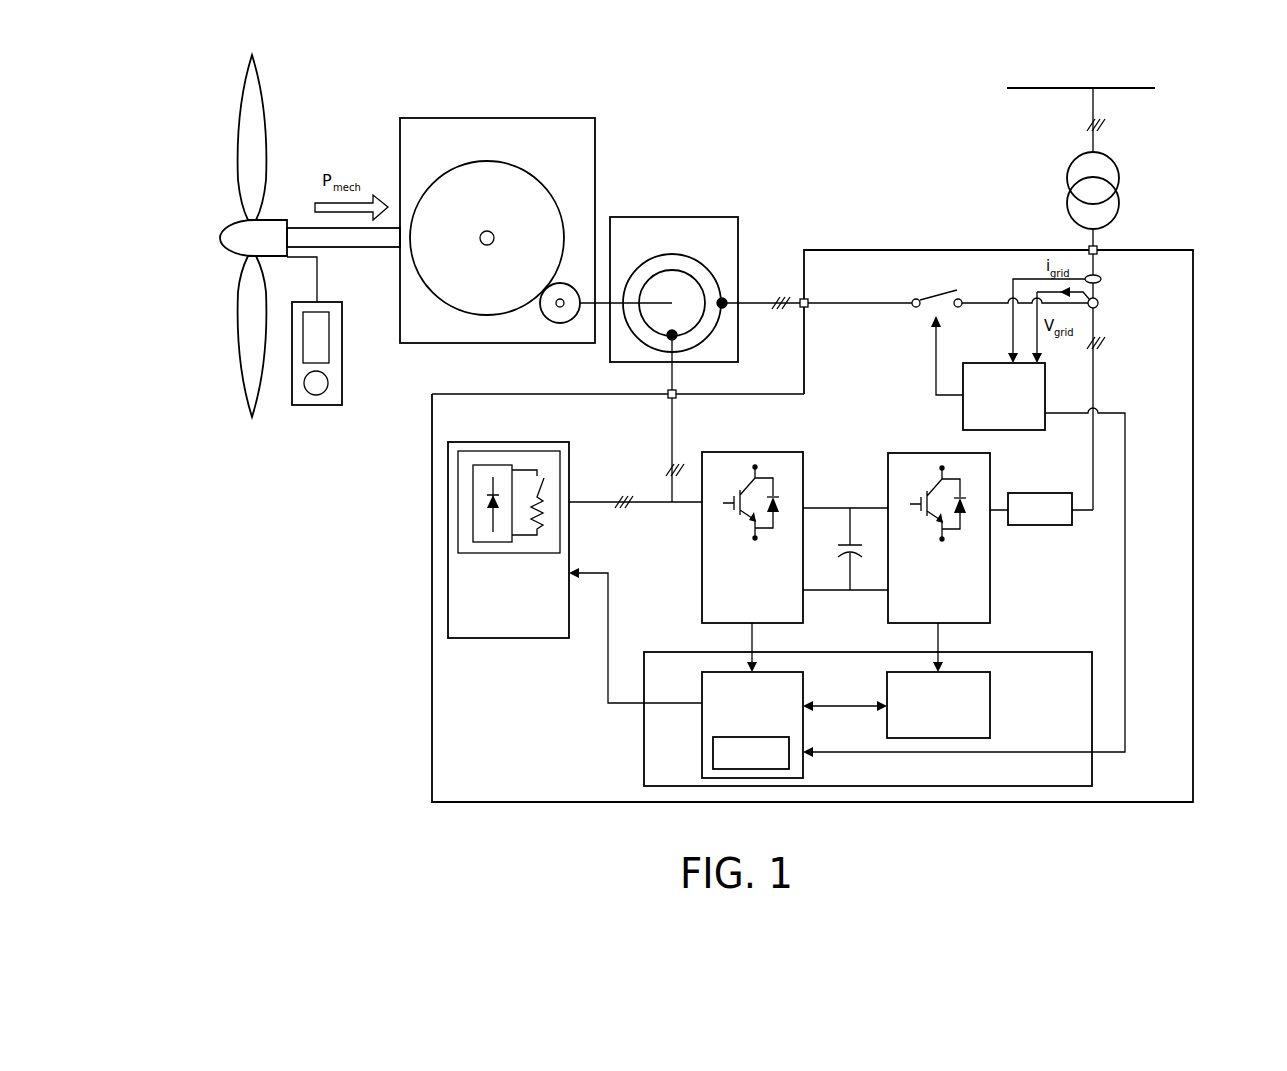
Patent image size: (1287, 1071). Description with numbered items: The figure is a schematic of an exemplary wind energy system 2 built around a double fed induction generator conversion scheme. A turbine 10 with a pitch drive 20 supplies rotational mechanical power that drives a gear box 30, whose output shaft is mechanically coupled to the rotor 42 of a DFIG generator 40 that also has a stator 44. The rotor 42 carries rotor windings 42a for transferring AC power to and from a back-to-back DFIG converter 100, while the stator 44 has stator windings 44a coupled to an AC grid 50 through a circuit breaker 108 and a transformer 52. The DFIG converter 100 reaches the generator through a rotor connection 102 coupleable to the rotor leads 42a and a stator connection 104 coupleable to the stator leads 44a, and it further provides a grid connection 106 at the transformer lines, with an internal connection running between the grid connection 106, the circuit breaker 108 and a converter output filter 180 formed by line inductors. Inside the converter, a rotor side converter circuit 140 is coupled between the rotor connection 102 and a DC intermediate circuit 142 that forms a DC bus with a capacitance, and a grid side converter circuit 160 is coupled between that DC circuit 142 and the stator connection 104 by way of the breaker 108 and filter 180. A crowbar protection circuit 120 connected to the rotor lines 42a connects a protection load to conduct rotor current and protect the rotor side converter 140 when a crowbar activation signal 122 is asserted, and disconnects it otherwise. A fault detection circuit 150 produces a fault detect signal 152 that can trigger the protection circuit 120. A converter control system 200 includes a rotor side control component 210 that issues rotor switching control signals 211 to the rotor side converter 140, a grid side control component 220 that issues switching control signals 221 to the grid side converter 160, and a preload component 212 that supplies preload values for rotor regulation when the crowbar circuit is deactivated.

The wind energy system 2 is at (190, 84).
The turbine 10 is at (238, 136).
The pitch drive 20 is at (342, 373).
The gear box 30 is at (400, 152).
The DFIG generator 40 is at (680, 217).
The rotor 42 is at (661, 340).
The rotor windings 42a is at (672, 380).
The stator 44 is at (718, 280).
The stator windings 44a is at (752, 305).
The AC grid 50 is at (1037, 88).
The transformer 52 is at (1136, 182).
The DFIG converter 100 is at (432, 779).
The rotor connection 102 is at (670, 399).
The stator connection 104 is at (808, 306).
The grid connection 106 is at (1097, 255).
The circuit breaker 108 is at (925, 315).
The protection circuit 120 is at (448, 597).
The crowbar activation signal 122 is at (608, 680).
The rotor side converter circuit 140 is at (702, 582).
The DC intermediate circuit 142 is at (847, 616).
The fault detection circuit 150 is at (963, 414).
The fault detect signal 152 is at (1127, 478).
The grid side converter circuit 160 is at (990, 587).
The converter output filter 180 is at (1060, 525).
The converter control system 200 is at (1053, 652).
The rotor side control component 210 is at (702, 688).
The rotor switching control signals 211 is at (752, 642).
The preload component 212 is at (713, 755).
The grid side control component 220 is at (887, 690).
The switching control signals 221 is at (938, 642).